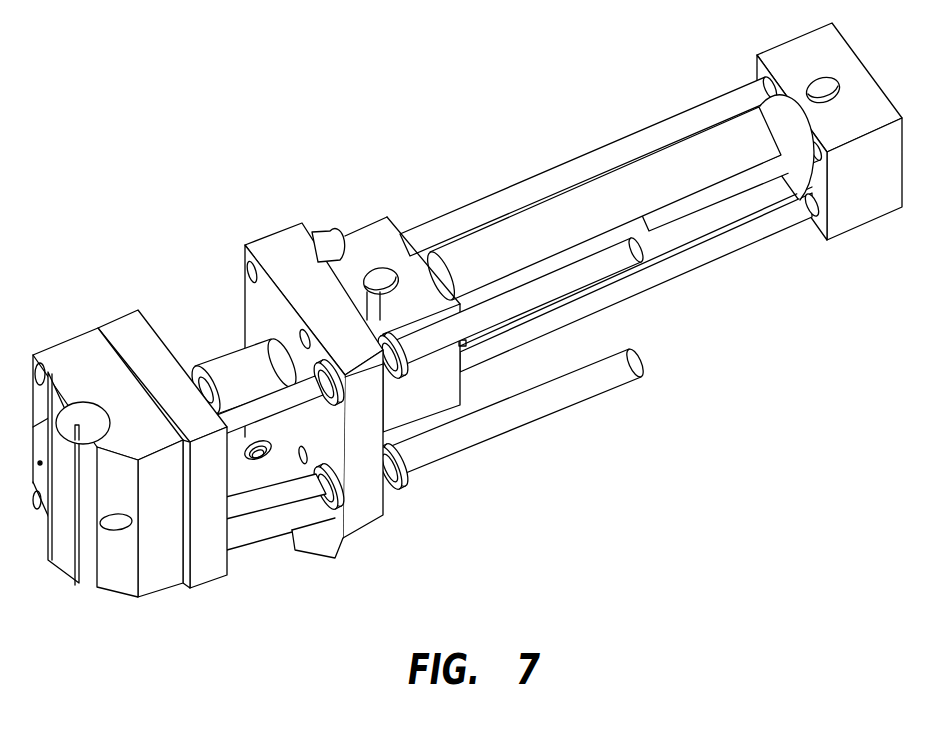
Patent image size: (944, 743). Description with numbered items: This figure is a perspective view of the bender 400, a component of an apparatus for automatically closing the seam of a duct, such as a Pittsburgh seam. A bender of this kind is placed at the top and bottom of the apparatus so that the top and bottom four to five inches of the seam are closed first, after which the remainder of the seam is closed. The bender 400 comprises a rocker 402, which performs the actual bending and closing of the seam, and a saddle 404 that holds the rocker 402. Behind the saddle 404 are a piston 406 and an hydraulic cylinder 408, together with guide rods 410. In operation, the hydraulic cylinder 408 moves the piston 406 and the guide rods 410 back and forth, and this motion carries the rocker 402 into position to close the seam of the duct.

The bender 400 is at (418, 122).
The rocker 402 is at (82, 415).
The saddle 404 is at (94, 355).
The piston 406 is at (230, 372).
The hydraulic cylinder 408 is at (608, 193).
The guide rods 410 is at (277, 406).